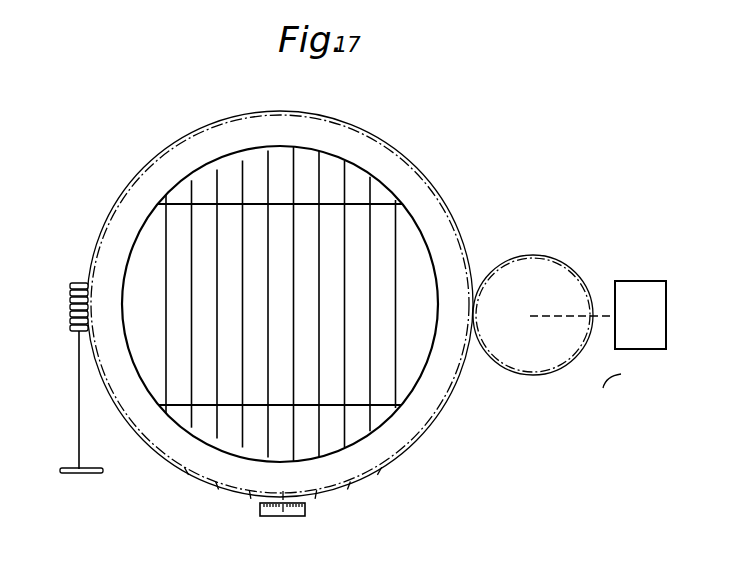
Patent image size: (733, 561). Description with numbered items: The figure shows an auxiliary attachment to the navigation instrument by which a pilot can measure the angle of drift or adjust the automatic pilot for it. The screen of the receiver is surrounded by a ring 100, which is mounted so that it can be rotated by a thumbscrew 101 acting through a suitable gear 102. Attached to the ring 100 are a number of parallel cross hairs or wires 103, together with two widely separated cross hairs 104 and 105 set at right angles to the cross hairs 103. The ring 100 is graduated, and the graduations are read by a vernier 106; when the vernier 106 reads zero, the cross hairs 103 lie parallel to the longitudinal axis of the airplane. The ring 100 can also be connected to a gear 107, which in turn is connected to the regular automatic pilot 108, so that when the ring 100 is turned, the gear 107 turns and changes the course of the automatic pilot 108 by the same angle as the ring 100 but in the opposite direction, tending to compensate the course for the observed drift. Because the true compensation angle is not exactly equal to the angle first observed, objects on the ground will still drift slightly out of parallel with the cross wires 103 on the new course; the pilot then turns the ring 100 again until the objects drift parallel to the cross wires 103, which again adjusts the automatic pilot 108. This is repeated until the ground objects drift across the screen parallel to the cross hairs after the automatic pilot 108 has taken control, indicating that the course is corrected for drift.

The ring 100 is at (430, 182).
The thumbscrew 101 is at (68, 474).
The gear 102 is at (70, 306).
The parallel cross hairs 103 is at (395, 306).
The cross hair 104 is at (279, 199).
The cross hair 105 is at (257, 409).
The vernier 106 is at (283, 517).
The gear 107 is at (520, 373).
The automatic pilot 108 is at (636, 350).